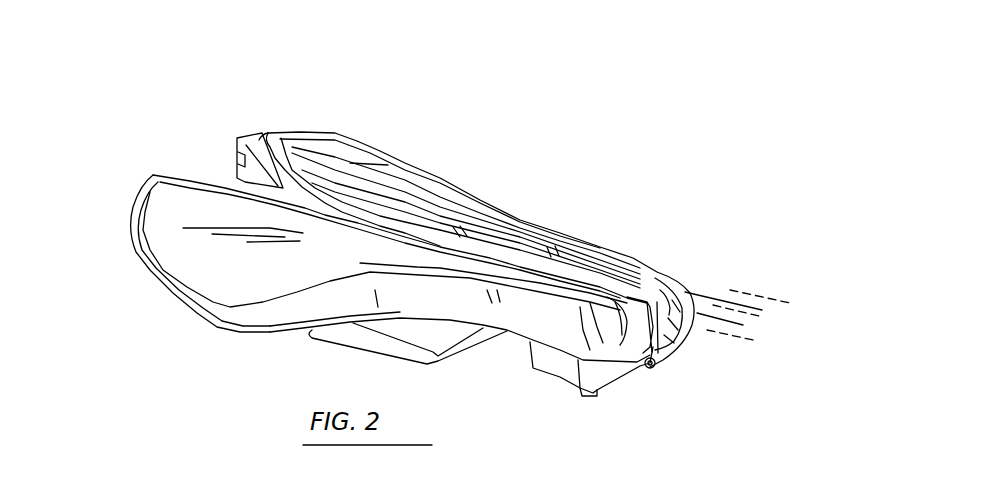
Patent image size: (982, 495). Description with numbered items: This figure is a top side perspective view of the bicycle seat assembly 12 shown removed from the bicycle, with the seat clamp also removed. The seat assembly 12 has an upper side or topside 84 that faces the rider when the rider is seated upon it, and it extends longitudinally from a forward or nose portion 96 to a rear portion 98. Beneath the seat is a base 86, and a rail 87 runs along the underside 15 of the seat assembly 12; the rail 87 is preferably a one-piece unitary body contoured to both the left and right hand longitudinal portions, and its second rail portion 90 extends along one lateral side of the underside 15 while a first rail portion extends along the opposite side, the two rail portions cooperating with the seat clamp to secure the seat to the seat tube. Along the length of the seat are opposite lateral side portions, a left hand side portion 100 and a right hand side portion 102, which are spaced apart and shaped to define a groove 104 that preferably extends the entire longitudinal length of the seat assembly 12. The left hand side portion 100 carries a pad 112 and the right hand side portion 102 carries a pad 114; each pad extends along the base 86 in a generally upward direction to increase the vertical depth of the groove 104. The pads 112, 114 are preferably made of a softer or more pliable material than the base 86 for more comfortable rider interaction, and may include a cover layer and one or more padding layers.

The seat assembly 12 is at (712, 186).
The rear portion 98 is at (305, 100).
The upper side or topside 84 is at (447, 92).
The left hand side portion 100 is at (262, 128).
The pad 112 is at (403, 176).
The base 86 is at (236, 143).
The forward or nose portion 96 is at (651, 226).
The groove 104 is at (618, 283).
The right hand side portion 102 is at (138, 172).
The pad 114 is at (200, 276).
The rail 87 is at (350, 332).
The second rail portion 90 is at (433, 358).
The underside 15 is at (500, 370).